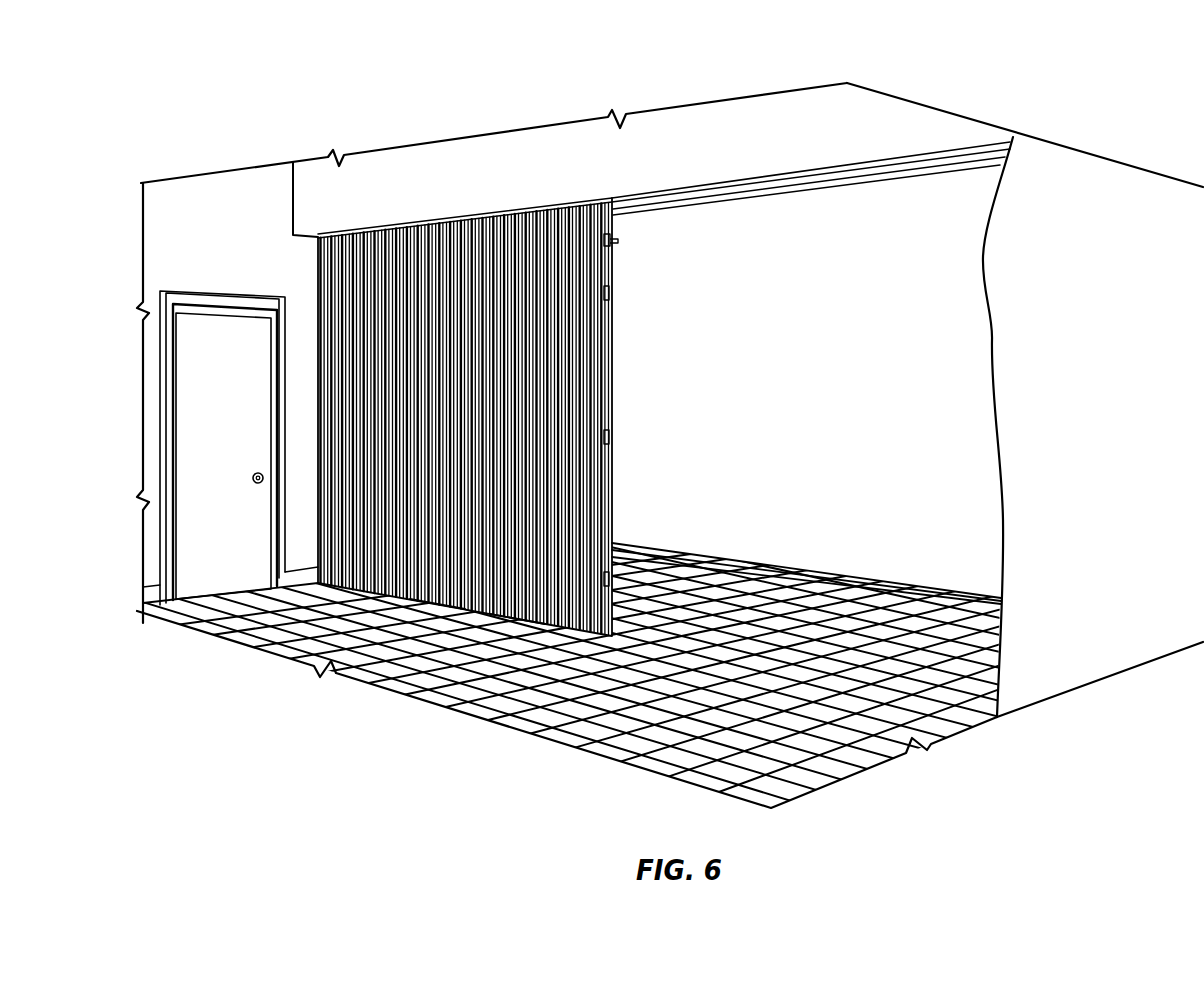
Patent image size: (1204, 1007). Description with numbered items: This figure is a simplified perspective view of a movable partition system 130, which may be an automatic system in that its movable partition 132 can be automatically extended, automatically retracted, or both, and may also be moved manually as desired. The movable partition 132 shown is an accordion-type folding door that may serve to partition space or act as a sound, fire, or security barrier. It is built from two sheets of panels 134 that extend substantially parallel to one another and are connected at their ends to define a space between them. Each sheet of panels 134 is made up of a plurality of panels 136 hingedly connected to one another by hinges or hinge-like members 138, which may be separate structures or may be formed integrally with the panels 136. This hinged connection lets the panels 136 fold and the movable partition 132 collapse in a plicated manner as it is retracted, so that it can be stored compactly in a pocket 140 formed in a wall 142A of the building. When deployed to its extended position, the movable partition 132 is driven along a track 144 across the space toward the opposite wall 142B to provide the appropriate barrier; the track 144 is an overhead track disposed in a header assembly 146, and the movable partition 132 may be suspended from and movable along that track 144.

The movable partition system 130 is at (384, 131).
The movable partition 132 is at (415, 377).
The sheet of panels 134 is at (508, 390).
The panels 136 is at (418, 605).
The hinges or hinge-like members 138 is at (495, 630).
The pocket 140 is at (317, 265).
The wall 142A is at (252, 276).
The wall 142B is at (1130, 421).
The track 144 is at (627, 193).
The header assembly 146 is at (843, 137).